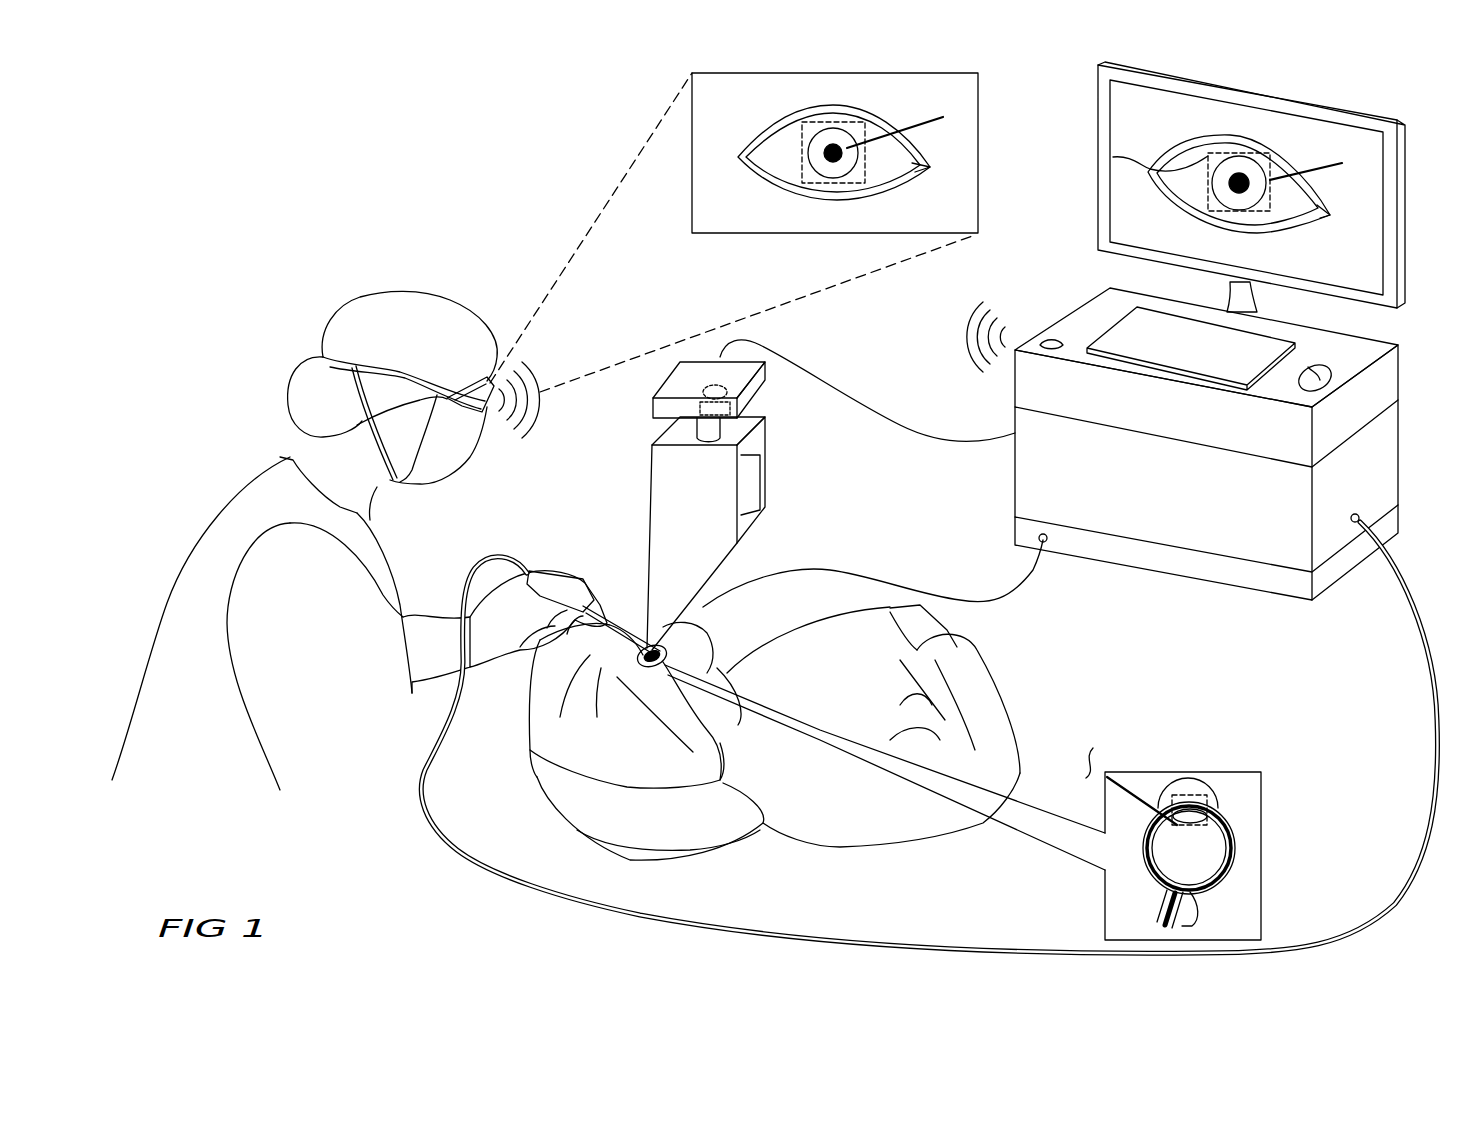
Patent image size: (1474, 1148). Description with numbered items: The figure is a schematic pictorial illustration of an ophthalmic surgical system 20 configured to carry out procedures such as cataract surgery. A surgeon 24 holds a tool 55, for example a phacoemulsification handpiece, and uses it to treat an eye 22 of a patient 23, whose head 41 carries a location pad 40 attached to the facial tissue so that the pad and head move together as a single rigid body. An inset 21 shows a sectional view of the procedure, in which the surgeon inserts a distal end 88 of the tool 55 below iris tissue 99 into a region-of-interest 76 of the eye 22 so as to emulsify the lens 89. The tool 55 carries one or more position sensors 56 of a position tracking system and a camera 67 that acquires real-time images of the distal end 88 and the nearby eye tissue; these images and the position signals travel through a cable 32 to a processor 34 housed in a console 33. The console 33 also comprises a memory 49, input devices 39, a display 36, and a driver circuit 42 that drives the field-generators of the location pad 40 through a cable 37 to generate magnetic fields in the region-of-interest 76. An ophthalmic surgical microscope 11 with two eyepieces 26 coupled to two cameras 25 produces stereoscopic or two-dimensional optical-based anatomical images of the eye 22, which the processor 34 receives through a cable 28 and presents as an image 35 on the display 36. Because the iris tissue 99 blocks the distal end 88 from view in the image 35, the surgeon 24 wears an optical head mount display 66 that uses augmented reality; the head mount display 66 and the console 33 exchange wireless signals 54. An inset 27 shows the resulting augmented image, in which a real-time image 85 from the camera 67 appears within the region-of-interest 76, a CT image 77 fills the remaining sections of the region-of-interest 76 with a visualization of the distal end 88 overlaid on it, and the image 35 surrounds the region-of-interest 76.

The ophthalmic surgical system 20 is at (248, 181).
The ophthalmic surgical microscope 11 is at (760, 488).
The inset 21 is at (1137, 773).
The eye 22 is at (703, 139).
The patient 23 is at (790, 830).
The surgeon 24 is at (180, 578).
The cameras 25 is at (770, 400).
The eyepieces 26 is at (700, 437).
The inset 27 is at (692, 231).
The cable 28 is at (895, 415).
The cable 32 is at (473, 865).
The console 33 is at (1426, 125).
The processor 34 is at (1030, 483).
The image 35 is at (730, 227).
The display 36 is at (1098, 194).
The cable 37 is at (877, 572).
The input devices 39 is at (1077, 281).
The location pad 40 is at (660, 673).
The head 41 is at (548, 723).
The driver circuit 42 is at (1035, 535).
The memory 49 is at (1015, 402).
The wireless signals 54 is at (527, 440).
The tool 55 is at (940, 138).
The position sensors 56 is at (865, 181).
The optical head mount display 66 is at (478, 378).
The camera 67 is at (835, 155).
The region-of-interest 76 is at (817, 100).
The CT image 77 is at (790, 128).
The RT images 85 is at (820, 157).
The distal end 88 is at (849, 143).
The lens 89 is at (1198, 806).
The iris tissue 99 is at (828, 165).